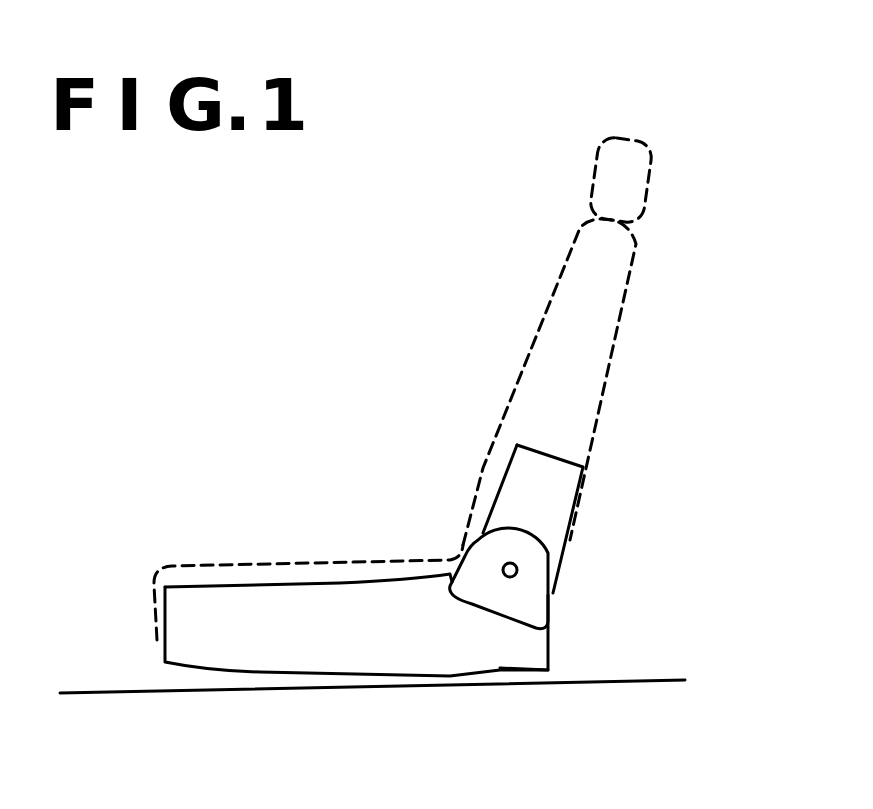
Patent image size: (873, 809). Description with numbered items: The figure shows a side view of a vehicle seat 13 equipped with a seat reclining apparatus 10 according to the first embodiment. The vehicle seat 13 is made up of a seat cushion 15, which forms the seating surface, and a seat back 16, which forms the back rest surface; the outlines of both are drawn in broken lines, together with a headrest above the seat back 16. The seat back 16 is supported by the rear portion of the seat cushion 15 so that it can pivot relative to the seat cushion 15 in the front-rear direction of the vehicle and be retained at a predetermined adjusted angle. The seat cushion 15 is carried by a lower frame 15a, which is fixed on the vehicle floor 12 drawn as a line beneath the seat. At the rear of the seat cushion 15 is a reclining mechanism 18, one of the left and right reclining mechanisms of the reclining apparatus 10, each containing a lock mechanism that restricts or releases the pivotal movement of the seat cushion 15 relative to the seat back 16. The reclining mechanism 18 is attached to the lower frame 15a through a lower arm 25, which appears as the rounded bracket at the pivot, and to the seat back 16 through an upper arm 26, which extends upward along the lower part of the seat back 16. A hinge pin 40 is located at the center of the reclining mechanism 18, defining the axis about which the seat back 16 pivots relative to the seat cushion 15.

The seat reclining apparatus 10 is at (418, 348).
The vehicle floor 12 is at (652, 678).
The vehicle seat 13 is at (509, 674).
The seat cushion 15 is at (334, 570).
The lower frame 15a is at (187, 626).
The seat back 16 is at (548, 340).
The reclining mechanism 18 is at (508, 524).
The lower arm 25 is at (538, 594).
The upper arm 26 is at (578, 462).
The hinge pin 40 is at (503, 564).